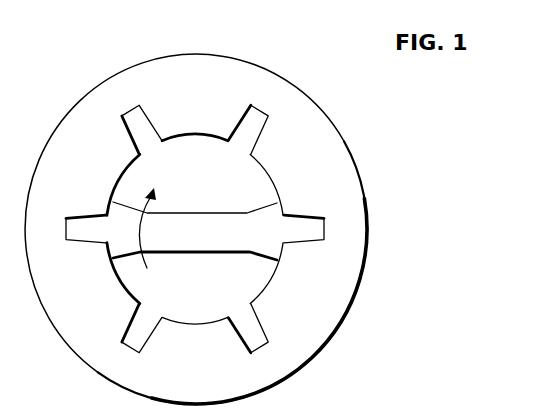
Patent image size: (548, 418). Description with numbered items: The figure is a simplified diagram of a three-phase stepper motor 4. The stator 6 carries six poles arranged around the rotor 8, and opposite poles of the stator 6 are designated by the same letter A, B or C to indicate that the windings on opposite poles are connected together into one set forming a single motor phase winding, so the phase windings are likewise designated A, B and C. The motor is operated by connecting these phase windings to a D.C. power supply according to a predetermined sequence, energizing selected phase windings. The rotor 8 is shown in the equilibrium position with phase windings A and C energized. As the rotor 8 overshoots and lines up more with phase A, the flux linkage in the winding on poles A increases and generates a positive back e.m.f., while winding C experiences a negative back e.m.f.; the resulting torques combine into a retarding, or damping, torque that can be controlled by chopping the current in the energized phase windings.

The three-phase stepper motor 4 is at (101, 64).
The stator 6 is at (337, 338).
The rotor 8 is at (192, 251).